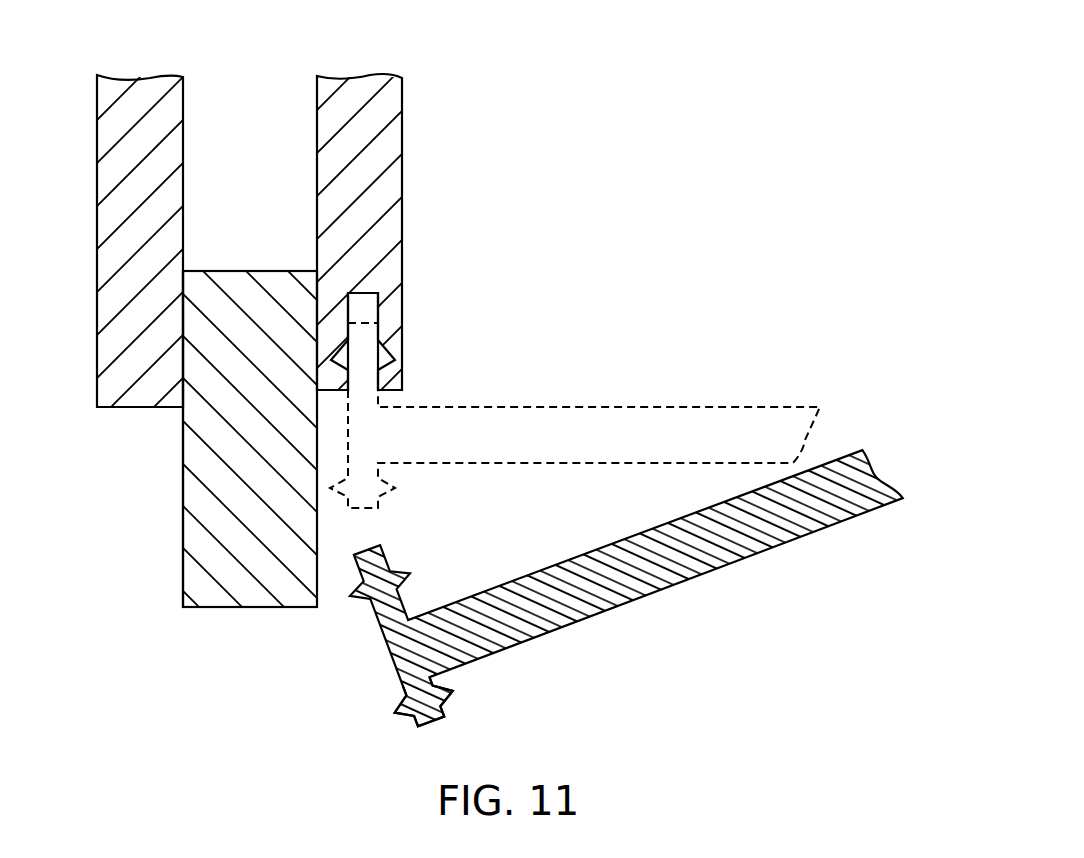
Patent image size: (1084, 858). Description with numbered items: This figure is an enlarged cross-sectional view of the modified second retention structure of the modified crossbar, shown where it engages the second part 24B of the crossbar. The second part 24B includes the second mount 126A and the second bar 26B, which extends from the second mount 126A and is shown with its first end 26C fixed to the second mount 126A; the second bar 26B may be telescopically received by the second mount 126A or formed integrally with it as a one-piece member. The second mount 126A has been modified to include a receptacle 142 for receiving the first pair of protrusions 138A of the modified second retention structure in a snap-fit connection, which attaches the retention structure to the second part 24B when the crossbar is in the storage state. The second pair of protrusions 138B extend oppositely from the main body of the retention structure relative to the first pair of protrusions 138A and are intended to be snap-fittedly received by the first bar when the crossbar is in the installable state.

The second part 24B is at (99, 520).
The second mount 126A is at (135, 112).
The second bar 26B is at (182, 528).
The first end 26C is at (168, 426).
The receptacle 142 is at (380, 302).
The first pair of protrusions 138A is at (397, 357).
The second pair of protrusions 138B is at (392, 488).